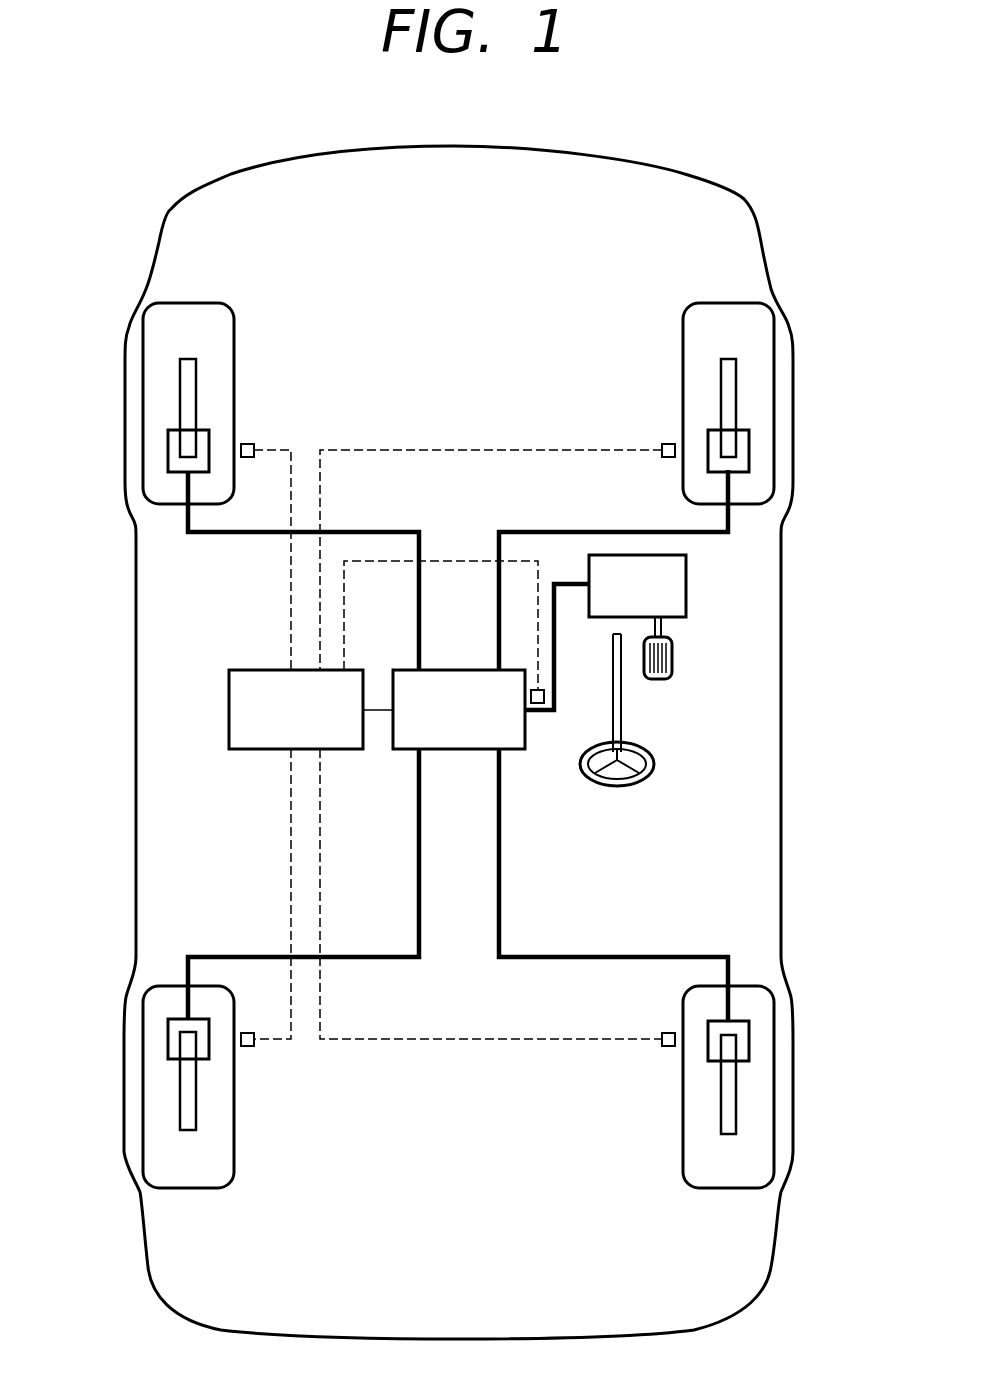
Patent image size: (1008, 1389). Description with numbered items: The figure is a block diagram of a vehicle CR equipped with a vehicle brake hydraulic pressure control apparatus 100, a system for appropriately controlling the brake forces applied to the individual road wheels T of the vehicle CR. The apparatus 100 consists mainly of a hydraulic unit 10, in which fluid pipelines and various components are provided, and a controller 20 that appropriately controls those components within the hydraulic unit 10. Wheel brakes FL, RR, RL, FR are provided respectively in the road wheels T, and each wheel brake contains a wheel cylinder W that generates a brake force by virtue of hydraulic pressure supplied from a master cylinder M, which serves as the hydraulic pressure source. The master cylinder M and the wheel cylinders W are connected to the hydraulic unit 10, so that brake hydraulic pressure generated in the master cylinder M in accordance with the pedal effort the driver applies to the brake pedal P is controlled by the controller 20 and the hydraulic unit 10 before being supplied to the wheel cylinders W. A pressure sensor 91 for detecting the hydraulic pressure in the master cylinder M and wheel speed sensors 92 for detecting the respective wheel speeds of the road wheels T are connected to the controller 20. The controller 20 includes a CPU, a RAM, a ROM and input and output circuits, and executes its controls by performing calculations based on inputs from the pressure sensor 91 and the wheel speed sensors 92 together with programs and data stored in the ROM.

The vehicle CR is at (620, 158).
The road wheels T is at (142, 353).
The wheel cylinders W is at (167, 447).
The wheel brake FL is at (179, 395).
The wheel brake FR is at (735, 395).
The wheel brake RL is at (179, 1092).
The wheel brake RR is at (735, 1092).
The vehicle brake hydraulic pressure control apparatus 100 is at (404, 744).
The hydraulic unit 10 is at (524, 728).
The controller 20 is at (257, 748).
The master cylinder M is at (685, 585).
The brake pedal P is at (671, 655).
The pressure sensor 91 is at (545, 694).
The wheel speed sensors 92 is at (249, 441).